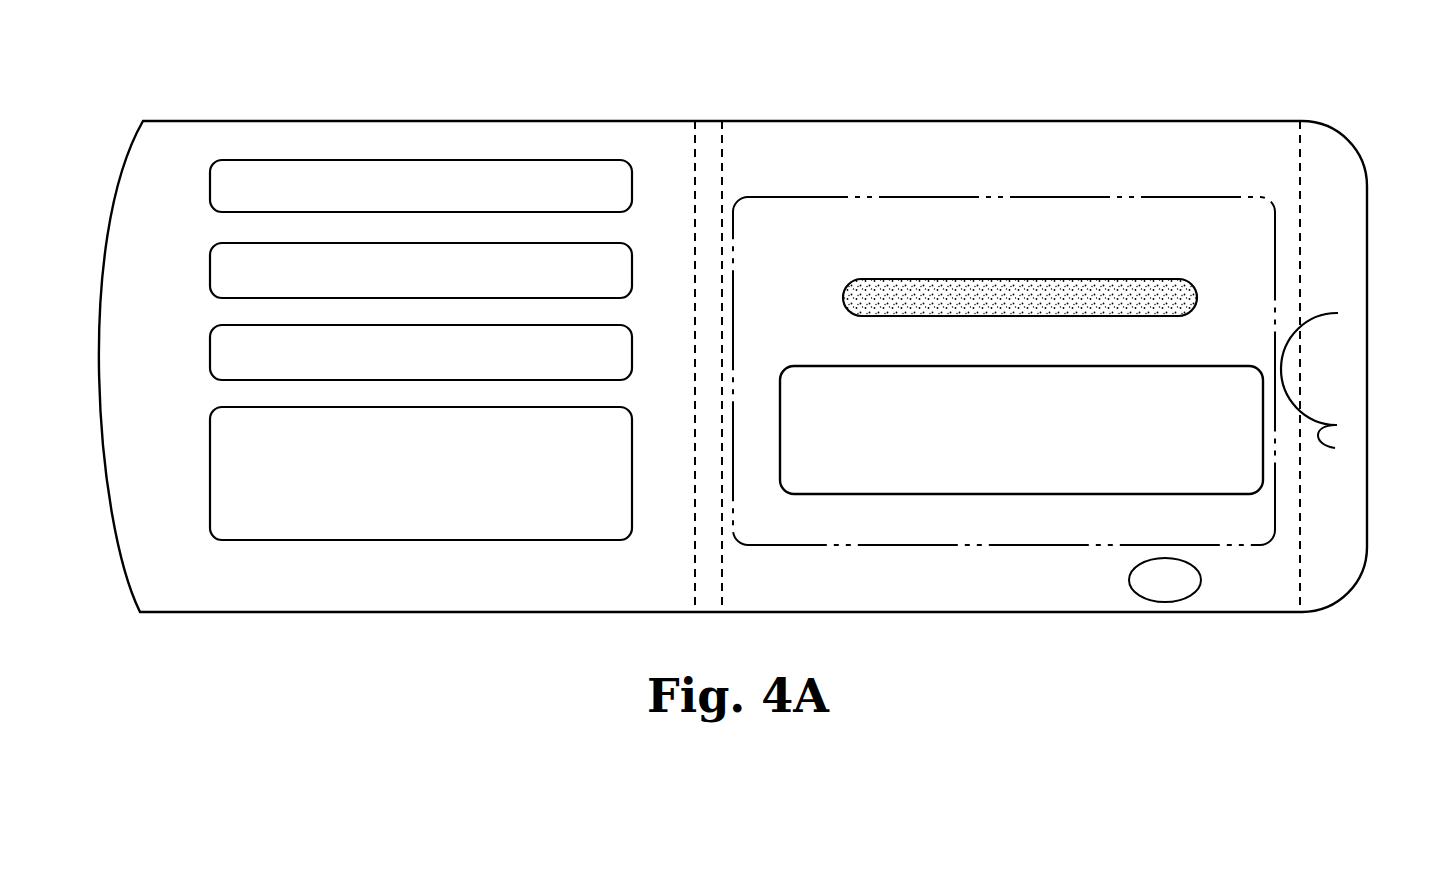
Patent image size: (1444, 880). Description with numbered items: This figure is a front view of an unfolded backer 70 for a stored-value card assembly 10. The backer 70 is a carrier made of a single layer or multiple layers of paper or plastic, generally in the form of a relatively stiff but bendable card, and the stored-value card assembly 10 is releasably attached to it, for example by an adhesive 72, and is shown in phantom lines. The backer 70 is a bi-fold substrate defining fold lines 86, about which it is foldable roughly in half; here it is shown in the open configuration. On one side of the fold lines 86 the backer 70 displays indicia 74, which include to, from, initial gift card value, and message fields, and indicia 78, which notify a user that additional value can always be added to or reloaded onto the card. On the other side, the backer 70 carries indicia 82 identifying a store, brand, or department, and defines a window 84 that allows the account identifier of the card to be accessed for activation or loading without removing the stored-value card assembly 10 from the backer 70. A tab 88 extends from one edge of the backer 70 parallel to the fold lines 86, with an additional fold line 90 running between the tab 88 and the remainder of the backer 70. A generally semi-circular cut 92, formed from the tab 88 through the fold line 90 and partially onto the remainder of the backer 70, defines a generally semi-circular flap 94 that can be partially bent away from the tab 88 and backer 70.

The stored-value card assembly 10 is at (1255, 237).
The backer 70 is at (1158, 83).
The adhesive 72 is at (1190, 297).
The indicia 74 is at (443, 160).
The indicia 78 is at (268, 590).
The indicia 82 is at (1135, 594).
The window 84 is at (1255, 462).
The fold lines 86 is at (693, 148).
The tab 88 is at (1332, 534).
The fold line 90 is at (1298, 582).
The semi-circular cut 92 is at (1335, 448).
The semi-circular flap 94 is at (1297, 370).